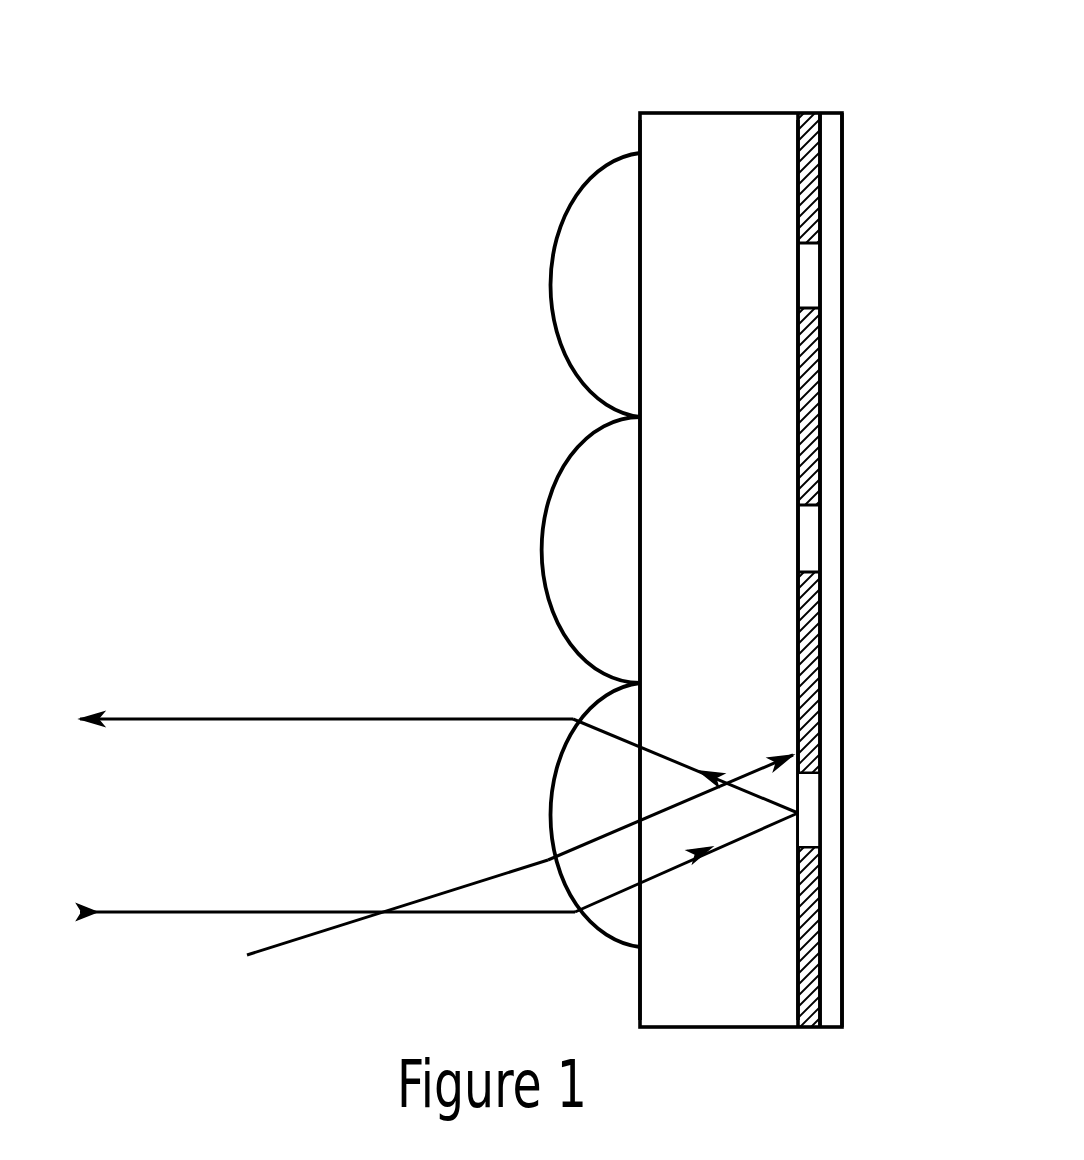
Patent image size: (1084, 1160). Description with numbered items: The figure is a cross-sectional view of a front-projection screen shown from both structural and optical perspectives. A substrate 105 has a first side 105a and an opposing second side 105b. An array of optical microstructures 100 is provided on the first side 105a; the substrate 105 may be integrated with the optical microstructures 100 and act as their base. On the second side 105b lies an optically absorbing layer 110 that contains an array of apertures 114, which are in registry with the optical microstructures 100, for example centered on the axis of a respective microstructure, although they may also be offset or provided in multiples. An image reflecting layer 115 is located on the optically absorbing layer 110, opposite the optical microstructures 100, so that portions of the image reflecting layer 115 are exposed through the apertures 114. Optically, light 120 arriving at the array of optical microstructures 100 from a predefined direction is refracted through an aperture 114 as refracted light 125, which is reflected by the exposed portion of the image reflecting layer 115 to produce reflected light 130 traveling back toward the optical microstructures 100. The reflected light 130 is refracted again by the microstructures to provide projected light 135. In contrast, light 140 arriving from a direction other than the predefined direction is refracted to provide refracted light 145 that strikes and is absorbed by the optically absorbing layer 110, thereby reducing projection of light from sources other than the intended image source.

The array of optical microstructures 100 is at (563, 203).
The substrate 105 is at (723, 112).
The first side of substrate 105a is at (640, 289).
The second side of substrate 105b is at (798, 280).
The optically absorbing layer 110 is at (810, 112).
The aperture 114 is at (810, 797).
The image reflecting layer 115 is at (836, 112).
The light 120 is at (343, 910).
The refracted light 125 is at (701, 864).
The reflected light 130 is at (662, 753).
The projected light 135 is at (343, 718).
The light 140 is at (490, 876).
The refracted light 145 is at (750, 757).